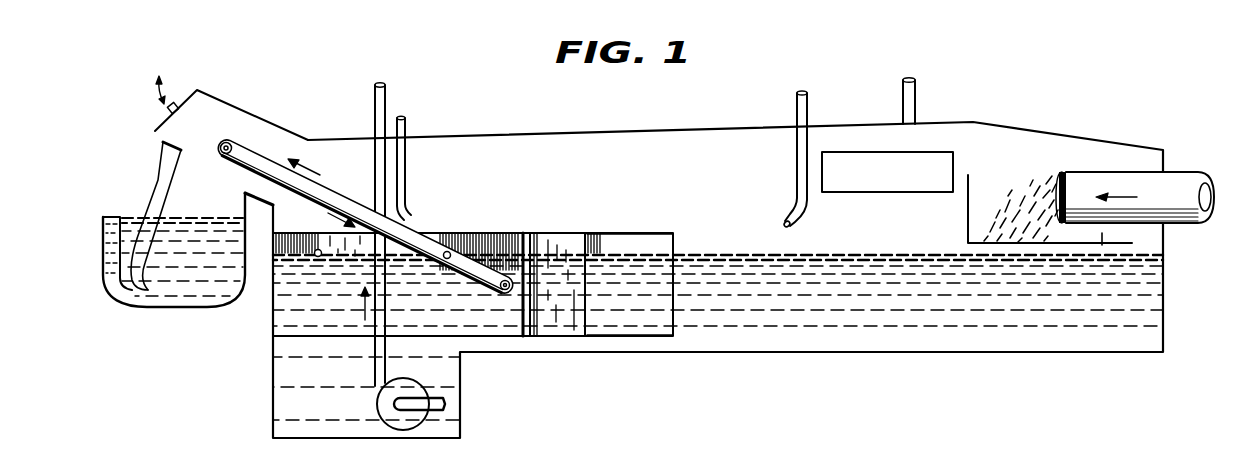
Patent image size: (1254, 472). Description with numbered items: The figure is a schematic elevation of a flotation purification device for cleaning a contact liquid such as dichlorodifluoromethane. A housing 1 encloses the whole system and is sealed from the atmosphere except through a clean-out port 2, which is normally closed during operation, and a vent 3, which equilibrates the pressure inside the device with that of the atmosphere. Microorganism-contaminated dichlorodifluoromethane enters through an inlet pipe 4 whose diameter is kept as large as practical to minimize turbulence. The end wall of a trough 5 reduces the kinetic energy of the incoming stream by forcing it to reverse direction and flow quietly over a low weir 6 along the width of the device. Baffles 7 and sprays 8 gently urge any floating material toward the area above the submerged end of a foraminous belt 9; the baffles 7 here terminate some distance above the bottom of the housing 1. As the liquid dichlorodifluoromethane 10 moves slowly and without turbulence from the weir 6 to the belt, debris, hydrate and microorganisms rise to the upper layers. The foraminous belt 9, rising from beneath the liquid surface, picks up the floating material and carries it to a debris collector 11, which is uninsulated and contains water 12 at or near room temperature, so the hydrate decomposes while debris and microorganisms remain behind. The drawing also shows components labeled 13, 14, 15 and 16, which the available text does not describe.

The housing 1 is at (777, 352).
The clean-out port 2 is at (197, 91).
The vent 3 is at (903, 104).
The inlet pipe 4 is at (1167, 207).
The trough 5 is at (989, 233).
The low weir 6 is at (1102, 238).
The baffles 7 is at (437, 236).
The sprays 8 is at (405, 125).
The foraminous belt 9 is at (323, 190).
The liquid dichlorodifluoromethane 10 is at (637, 312).
The debris collector 11 is at (194, 309).
The water 12 is at (190, 218).
The heater 13 is at (899, 179).
The drain pipe 14 is at (103, 227).
The pump 15 is at (405, 420).
The riser pipe 16 is at (385, 88).